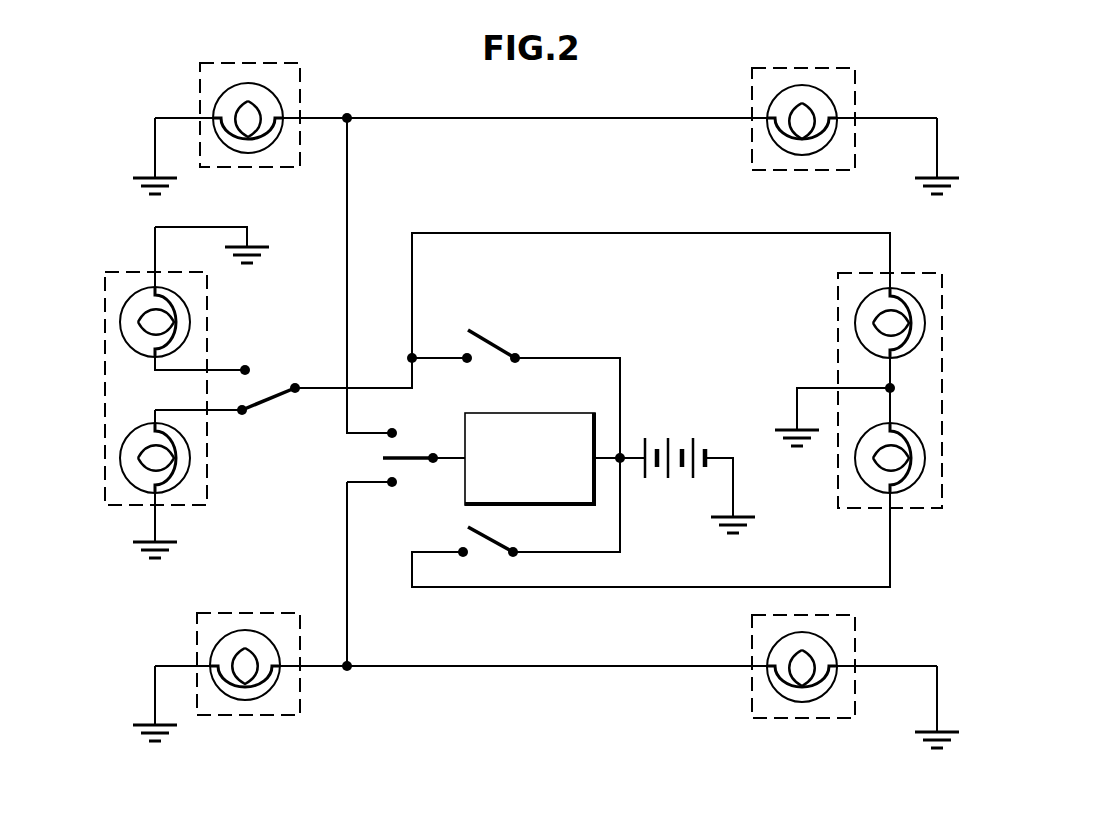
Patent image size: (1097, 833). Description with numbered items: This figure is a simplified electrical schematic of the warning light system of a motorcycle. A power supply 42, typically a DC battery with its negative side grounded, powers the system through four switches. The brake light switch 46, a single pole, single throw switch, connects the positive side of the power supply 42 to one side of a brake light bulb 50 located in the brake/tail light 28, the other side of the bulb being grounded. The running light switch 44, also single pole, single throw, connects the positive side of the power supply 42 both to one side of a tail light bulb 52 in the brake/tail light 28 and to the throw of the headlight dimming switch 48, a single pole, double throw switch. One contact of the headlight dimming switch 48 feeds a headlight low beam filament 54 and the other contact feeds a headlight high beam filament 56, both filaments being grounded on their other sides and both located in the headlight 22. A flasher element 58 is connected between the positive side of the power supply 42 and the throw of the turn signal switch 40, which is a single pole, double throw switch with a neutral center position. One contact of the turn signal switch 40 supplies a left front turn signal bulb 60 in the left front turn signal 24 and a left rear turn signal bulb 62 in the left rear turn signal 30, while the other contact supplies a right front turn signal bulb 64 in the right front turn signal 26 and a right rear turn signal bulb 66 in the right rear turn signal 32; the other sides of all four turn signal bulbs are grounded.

The headlight 22 is at (205, 493).
The left front turn signal 24 is at (235, 715).
The right front turn signal 26 is at (272, 67).
The brake/tail light 28 is at (838, 352).
The left rear turn signal 30 is at (822, 718).
The right rear turn signal 32 is at (775, 68).
The turn signal switch 40 is at (414, 462).
The power supply 42 is at (660, 434).
The running light switch 44 is at (490, 345).
The brake light switch 46 is at (498, 545).
The headlight dimming switch 48 is at (272, 385).
The brake light bulb 50 is at (870, 492).
The tail light bulb 52 is at (856, 312).
The headlight low beam filament 54 is at (188, 455).
The headlight high beam filament 56 is at (187, 305).
The flasher element 58 is at (568, 392).
The left front turn signal bulb 60 is at (231, 633).
The left rear turn signal bulb 62 is at (790, 700).
The right front turn signal bulb 64 is at (223, 90).
The right rear turn signal bulb 66 is at (812, 88).